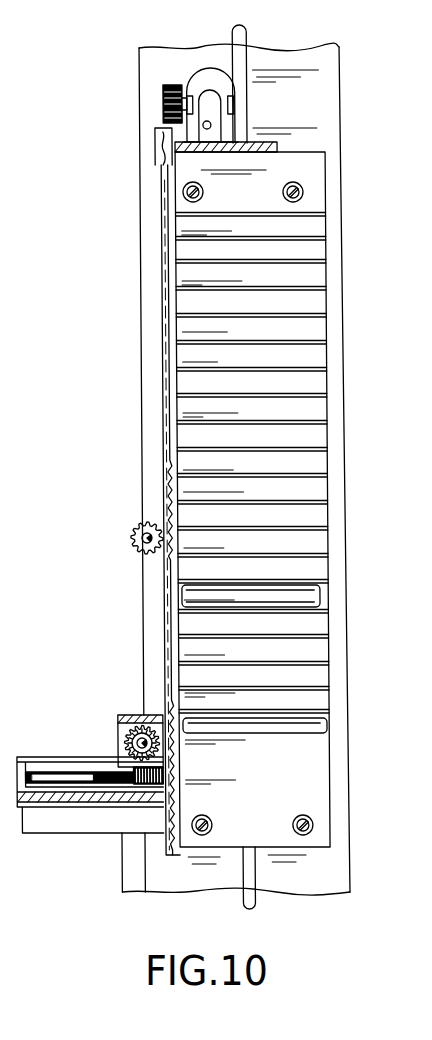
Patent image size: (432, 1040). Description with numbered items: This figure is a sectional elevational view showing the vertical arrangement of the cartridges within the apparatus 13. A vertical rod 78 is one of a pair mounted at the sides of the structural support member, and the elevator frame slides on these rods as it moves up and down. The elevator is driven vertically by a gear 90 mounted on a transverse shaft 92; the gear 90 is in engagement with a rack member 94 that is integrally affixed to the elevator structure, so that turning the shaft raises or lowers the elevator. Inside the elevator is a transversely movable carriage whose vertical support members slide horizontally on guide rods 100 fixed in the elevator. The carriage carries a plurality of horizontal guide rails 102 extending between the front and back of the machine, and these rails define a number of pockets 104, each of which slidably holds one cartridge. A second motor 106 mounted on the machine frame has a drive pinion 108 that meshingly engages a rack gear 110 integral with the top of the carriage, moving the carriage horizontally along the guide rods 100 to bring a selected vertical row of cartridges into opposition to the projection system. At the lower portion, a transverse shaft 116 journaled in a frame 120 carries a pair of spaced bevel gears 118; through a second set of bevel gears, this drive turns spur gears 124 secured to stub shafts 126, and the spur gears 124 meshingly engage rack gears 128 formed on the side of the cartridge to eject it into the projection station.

The ticket issuing mechanism 13 is at (424, 56).
The vertical rods 78 is at (258, 879).
The gear 90 is at (138, 538).
The transverse shaft 92 is at (142, 551).
The rack member 94 is at (167, 480).
The guide rods 100 is at (289, 824).
The horizontal guide rails 102 is at (314, 394).
The pockets 104 is at (252, 499).
The second motor 106 is at (207, 80).
The drive pinion 108 is at (171, 84).
The rack gear 110 is at (160, 128).
The transverse shaft 116 is at (122, 743).
The bevel gears 118 is at (122, 738).
The frame 120 is at (131, 713).
The spur gears 124 is at (163, 776).
The stub shafts 126 is at (163, 761).
The rack gears 128 is at (97, 785).